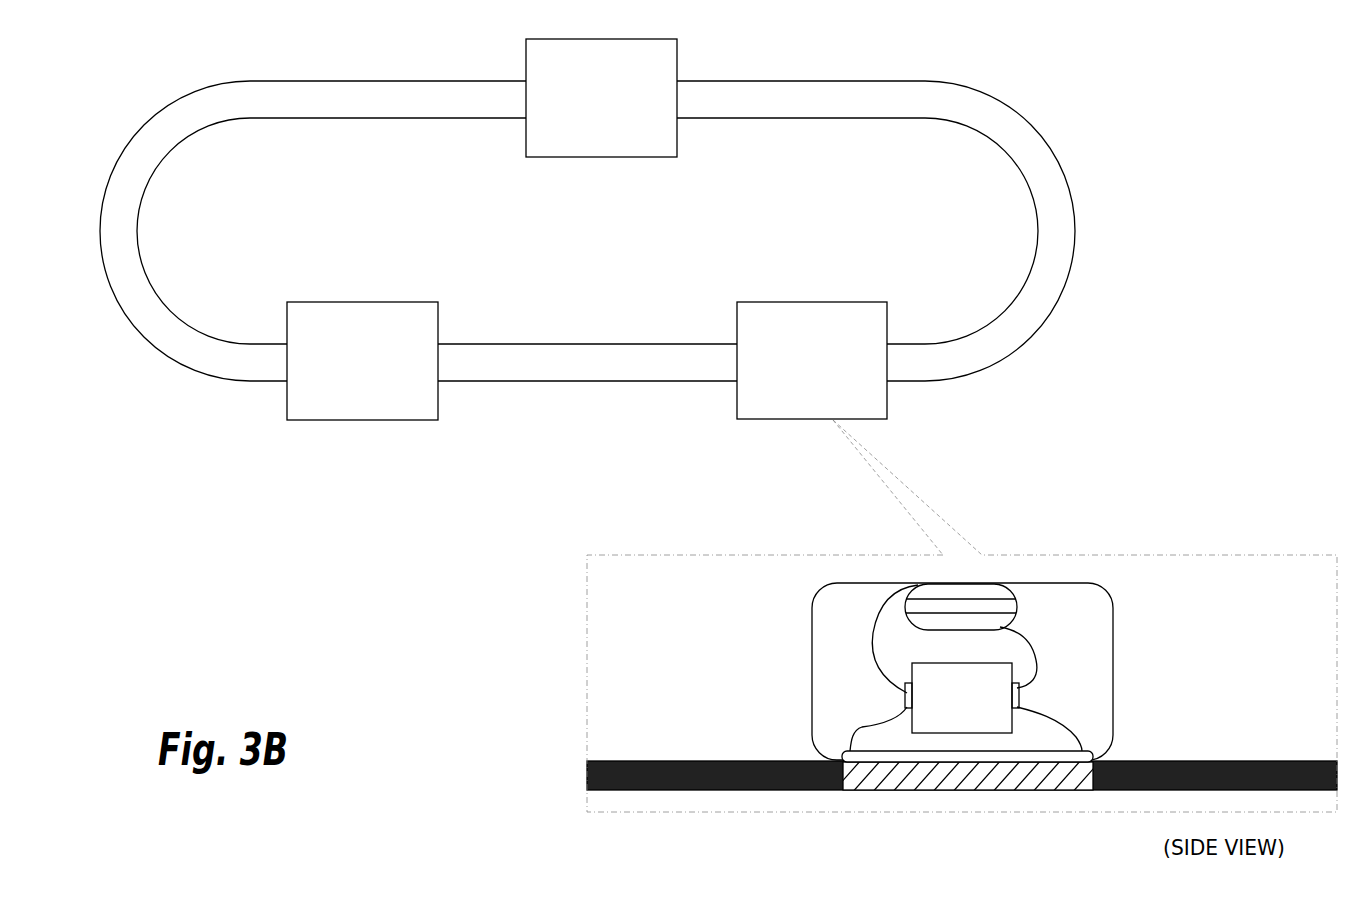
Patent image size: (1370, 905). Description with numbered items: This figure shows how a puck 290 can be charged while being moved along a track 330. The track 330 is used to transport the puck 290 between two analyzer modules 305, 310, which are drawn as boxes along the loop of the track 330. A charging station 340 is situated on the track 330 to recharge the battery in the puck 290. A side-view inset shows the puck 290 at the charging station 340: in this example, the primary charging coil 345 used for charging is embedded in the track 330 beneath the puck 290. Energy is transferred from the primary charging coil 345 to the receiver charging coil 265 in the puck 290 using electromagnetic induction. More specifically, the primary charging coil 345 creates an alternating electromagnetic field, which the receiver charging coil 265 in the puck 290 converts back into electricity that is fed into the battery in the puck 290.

The analyzer module 305 is at (601, 98).
The analyzer module 310 is at (362, 361).
The charging station 340 is at (859, 428).
The track 330 is at (1055, 207).
The puck 290 is at (810, 650).
The primary charging coil 345 is at (837, 760).
The receiver charging coil 265 is at (1097, 758).